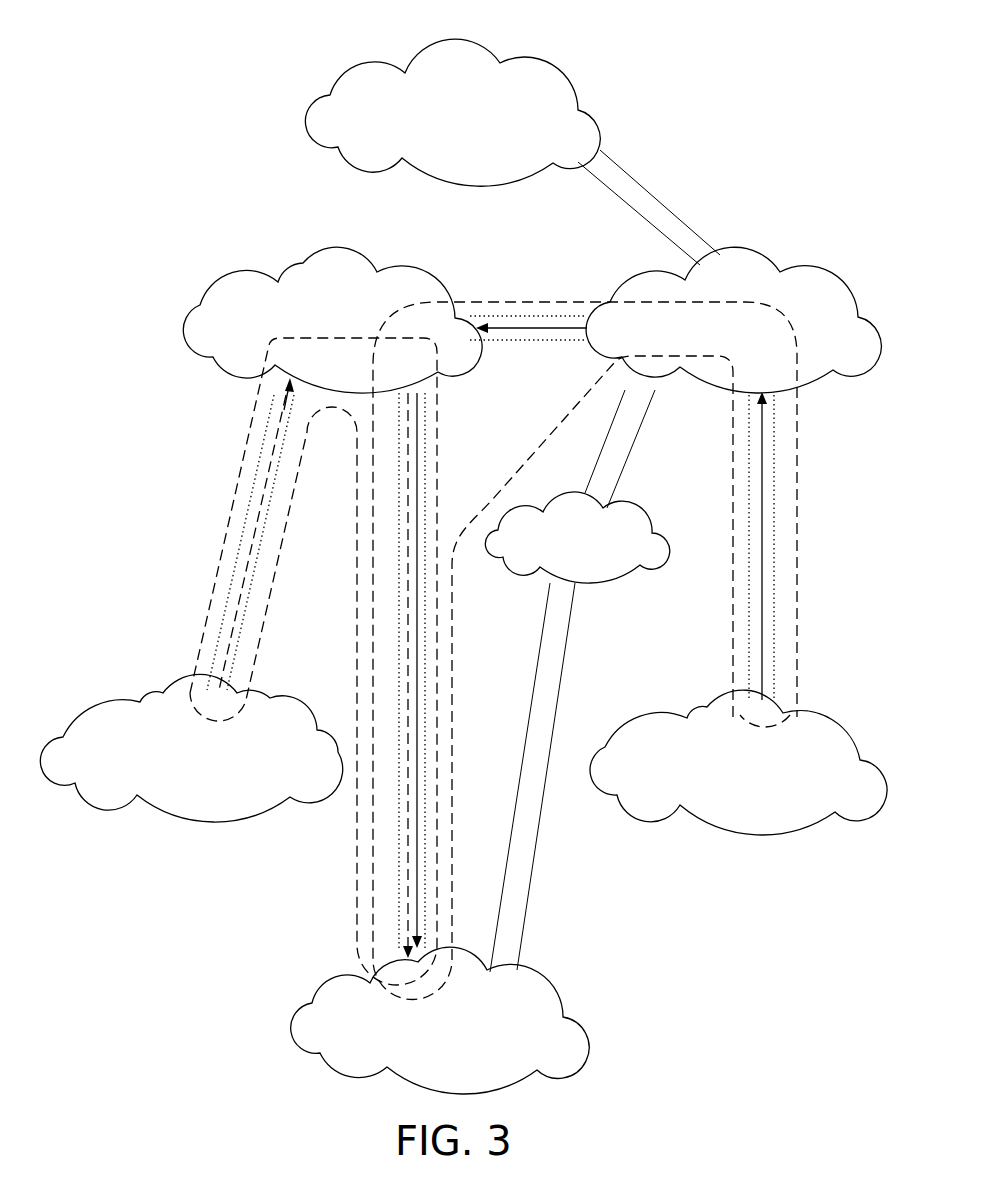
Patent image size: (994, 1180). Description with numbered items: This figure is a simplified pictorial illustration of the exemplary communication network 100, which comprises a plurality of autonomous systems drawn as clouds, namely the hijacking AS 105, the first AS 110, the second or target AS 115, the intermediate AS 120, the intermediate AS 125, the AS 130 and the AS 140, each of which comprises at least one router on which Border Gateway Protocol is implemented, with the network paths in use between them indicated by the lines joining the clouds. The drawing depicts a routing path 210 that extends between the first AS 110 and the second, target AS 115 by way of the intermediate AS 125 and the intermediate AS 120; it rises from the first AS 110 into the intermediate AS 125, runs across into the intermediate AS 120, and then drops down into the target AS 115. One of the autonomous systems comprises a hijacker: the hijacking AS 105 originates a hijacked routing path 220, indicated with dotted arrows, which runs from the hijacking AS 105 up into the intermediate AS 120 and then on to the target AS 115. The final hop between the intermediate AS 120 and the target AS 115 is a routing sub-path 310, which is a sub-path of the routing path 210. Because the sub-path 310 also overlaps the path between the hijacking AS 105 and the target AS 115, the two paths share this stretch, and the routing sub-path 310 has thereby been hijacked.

The communication network 100 is at (255, 161).
The hijacking AS 105 is at (267, 693).
The first AS 110 is at (841, 714).
The second AS 115 is at (582, 1028).
The intermediate AS 120 is at (397, 272).
The intermediate AS 125 is at (809, 269).
The autonomous system 130 is at (659, 546).
The autonomous system 140 is at (553, 66).
The routing path 210 is at (798, 497).
The hijacked path 220 is at (251, 451).
The routing sub-path 310 is at (438, 440).